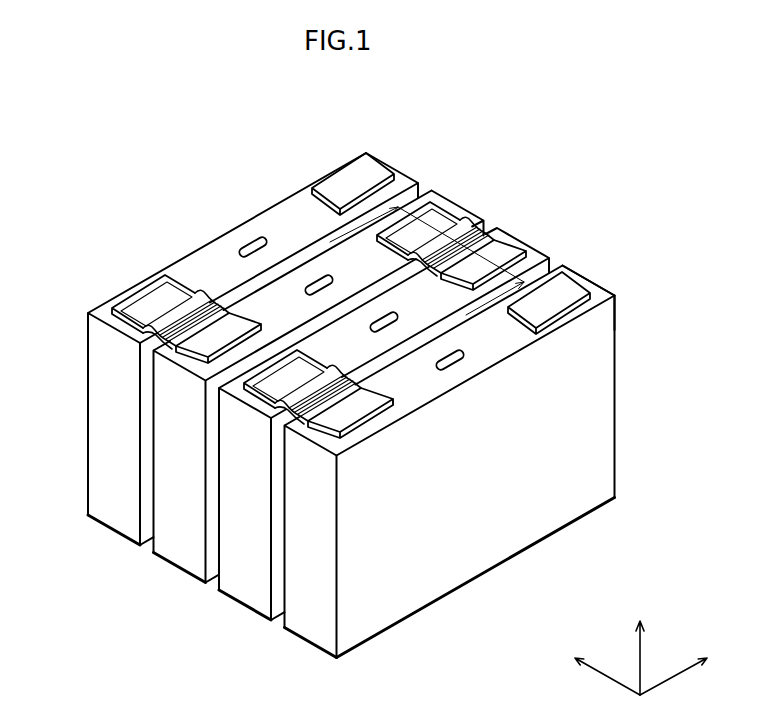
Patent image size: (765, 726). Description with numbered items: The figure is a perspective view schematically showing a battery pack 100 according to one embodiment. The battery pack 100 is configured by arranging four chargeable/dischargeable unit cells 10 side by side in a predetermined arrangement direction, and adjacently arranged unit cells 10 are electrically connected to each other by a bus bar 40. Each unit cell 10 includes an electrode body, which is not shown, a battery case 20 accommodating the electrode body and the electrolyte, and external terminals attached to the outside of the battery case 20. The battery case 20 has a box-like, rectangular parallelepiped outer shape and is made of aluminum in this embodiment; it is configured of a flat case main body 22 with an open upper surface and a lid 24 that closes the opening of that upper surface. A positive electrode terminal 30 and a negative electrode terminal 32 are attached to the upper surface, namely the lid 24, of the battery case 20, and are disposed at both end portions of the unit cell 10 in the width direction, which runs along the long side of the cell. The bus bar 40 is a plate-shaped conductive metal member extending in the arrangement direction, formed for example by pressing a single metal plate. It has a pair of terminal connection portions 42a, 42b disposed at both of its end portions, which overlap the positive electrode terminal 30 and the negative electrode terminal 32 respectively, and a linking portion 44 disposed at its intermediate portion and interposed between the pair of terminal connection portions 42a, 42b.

The battery pack 100 is at (698, 101).
The unit cell 10 is at (177, 560).
The battery case 20 is at (413, 588).
The case main body 22 is at (367, 613).
The lid 24 is at (513, 336).
The positive electrode terminal 30 is at (386, 420).
The negative electrode terminal 32 is at (586, 305).
The bus bar 40 is at (333, 316).
The terminal connection portion 42a is at (142, 300).
The terminal connection portion 42b is at (200, 347).
The linking portion 44 is at (137, 314).